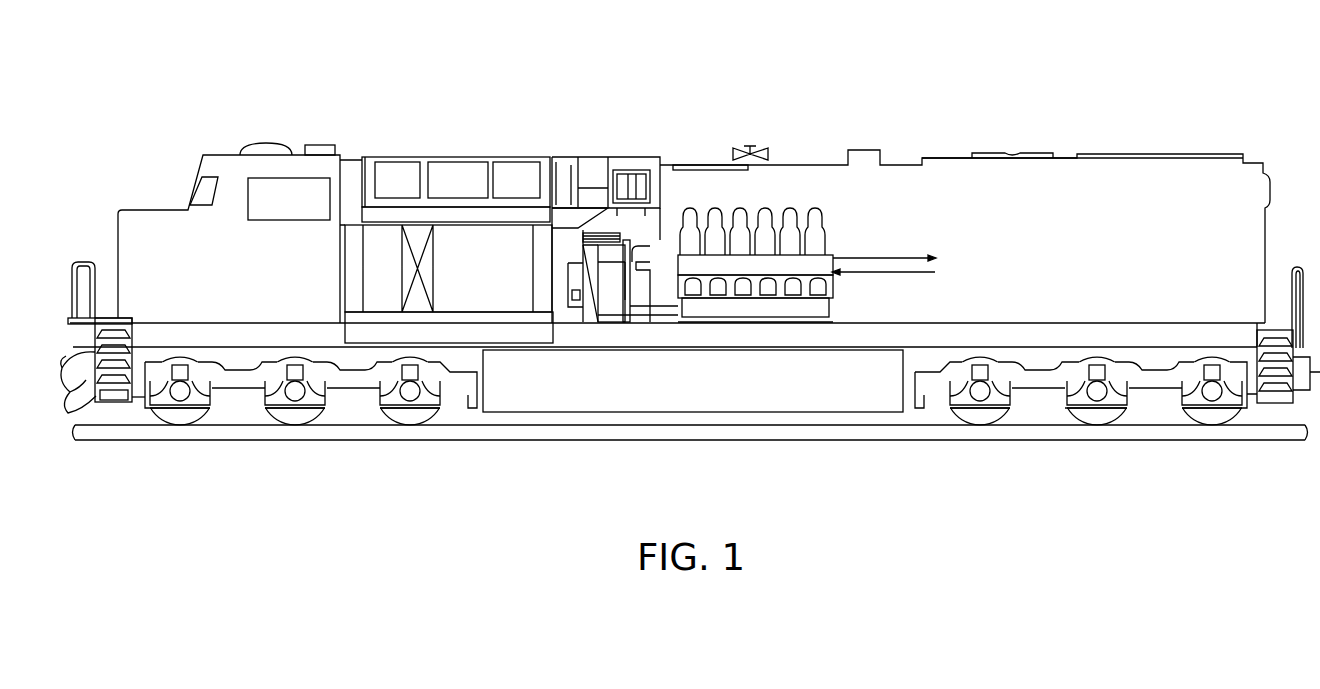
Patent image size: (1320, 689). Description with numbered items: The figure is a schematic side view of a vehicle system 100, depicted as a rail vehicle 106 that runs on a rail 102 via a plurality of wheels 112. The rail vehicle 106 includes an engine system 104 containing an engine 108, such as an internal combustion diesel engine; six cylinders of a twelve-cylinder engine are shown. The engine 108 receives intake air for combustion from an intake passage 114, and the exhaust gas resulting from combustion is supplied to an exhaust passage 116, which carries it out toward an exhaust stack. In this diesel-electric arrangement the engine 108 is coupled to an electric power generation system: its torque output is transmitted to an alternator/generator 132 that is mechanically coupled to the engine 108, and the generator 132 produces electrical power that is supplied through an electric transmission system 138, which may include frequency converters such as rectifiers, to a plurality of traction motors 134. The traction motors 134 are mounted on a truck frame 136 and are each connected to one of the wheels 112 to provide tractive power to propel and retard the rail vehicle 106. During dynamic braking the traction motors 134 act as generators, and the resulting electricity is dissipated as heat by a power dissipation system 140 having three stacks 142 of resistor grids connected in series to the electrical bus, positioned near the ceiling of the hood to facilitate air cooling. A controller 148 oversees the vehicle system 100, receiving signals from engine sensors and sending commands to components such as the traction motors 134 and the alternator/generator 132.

The vehicle system 100 is at (1176, 62).
The rail 102 is at (1262, 440).
The engine system 104 is at (827, 192).
The rail vehicle 106 is at (1090, 153).
The engine 108 is at (770, 275).
The wheels 112 is at (310, 420).
The intake passage 114 is at (866, 272).
The exhaust passage 116 is at (866, 258).
The alternator/generator 132 is at (637, 278).
The traction motors 134 is at (180, 362).
The truck frame 136 is at (448, 380).
The electric transmission system 138 is at (498, 279).
The power dissipation system 140 is at (462, 143).
The stacks 142 is at (532, 194).
The controller 148 is at (348, 270).